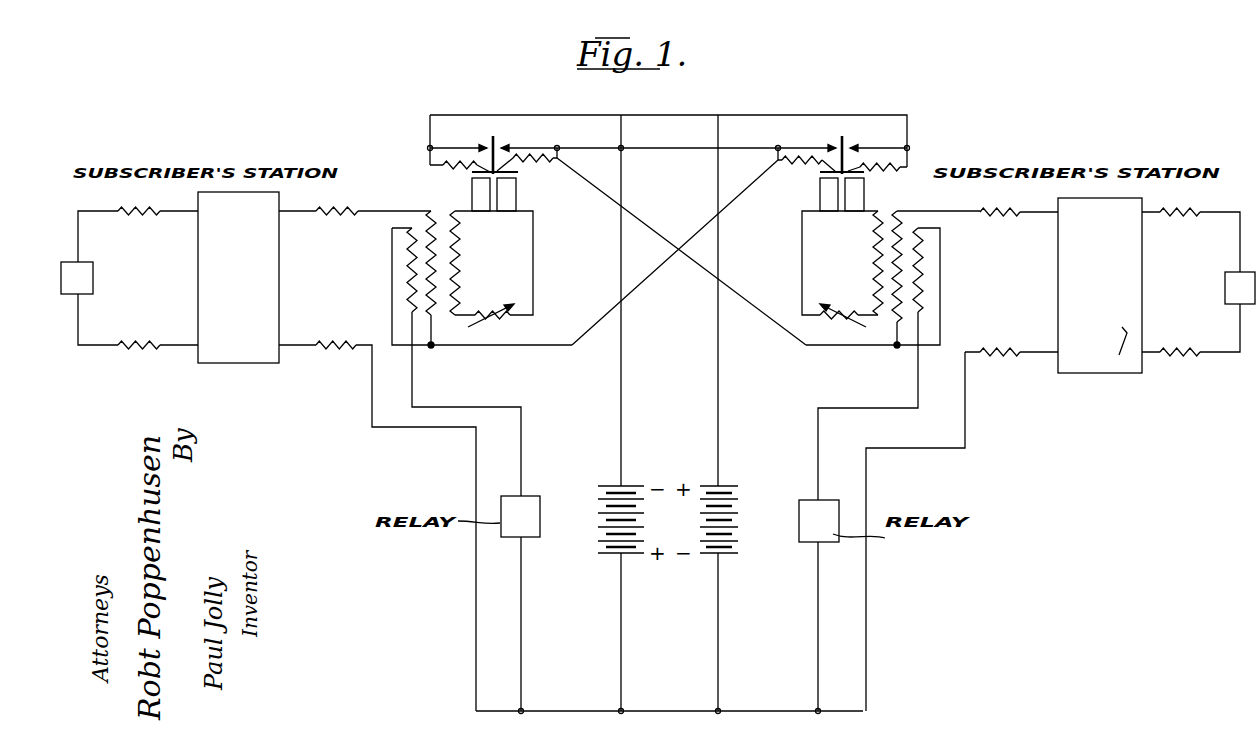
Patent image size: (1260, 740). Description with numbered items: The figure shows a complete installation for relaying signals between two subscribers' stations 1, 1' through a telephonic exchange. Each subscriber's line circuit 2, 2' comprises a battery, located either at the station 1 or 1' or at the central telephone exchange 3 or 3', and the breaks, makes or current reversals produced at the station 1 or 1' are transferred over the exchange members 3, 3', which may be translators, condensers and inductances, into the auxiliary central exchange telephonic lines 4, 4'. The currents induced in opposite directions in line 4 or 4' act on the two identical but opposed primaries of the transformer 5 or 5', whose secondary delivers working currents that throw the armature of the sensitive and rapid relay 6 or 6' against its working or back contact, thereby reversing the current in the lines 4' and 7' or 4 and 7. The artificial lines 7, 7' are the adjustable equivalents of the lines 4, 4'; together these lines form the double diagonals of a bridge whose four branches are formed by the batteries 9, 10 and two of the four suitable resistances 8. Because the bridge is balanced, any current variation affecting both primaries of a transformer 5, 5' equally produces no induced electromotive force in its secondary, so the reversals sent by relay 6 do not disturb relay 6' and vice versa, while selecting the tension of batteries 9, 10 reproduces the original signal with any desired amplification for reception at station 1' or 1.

The subscriber's station 1 is at (77, 240).
The subscriber's line circuit 2 is at (139, 278).
The central telephone exchange member 3 is at (238, 277).
The auxiliary central exchange telephonic line 4 is at (337, 278).
The transformer 5 is at (431, 251).
The relay 6 is at (491, 249).
The artificial line 7 is at (520, 516).
The resistance 8 is at (668, 173).
The battery 9 is at (730, 413).
The battery 10 is at (608, 413).
The subscriber's station 1' is at (1233, 247).
The subscriber's line circuit 2' is at (1180, 282).
The central telephone exchange member 3' is at (1100, 285).
The auxiliary central exchange telephonic line 4' is at (1000, 282).
The transformer 5' is at (904, 256).
The relay 6' is at (836, 249).
The artificial line 7' is at (819, 521).